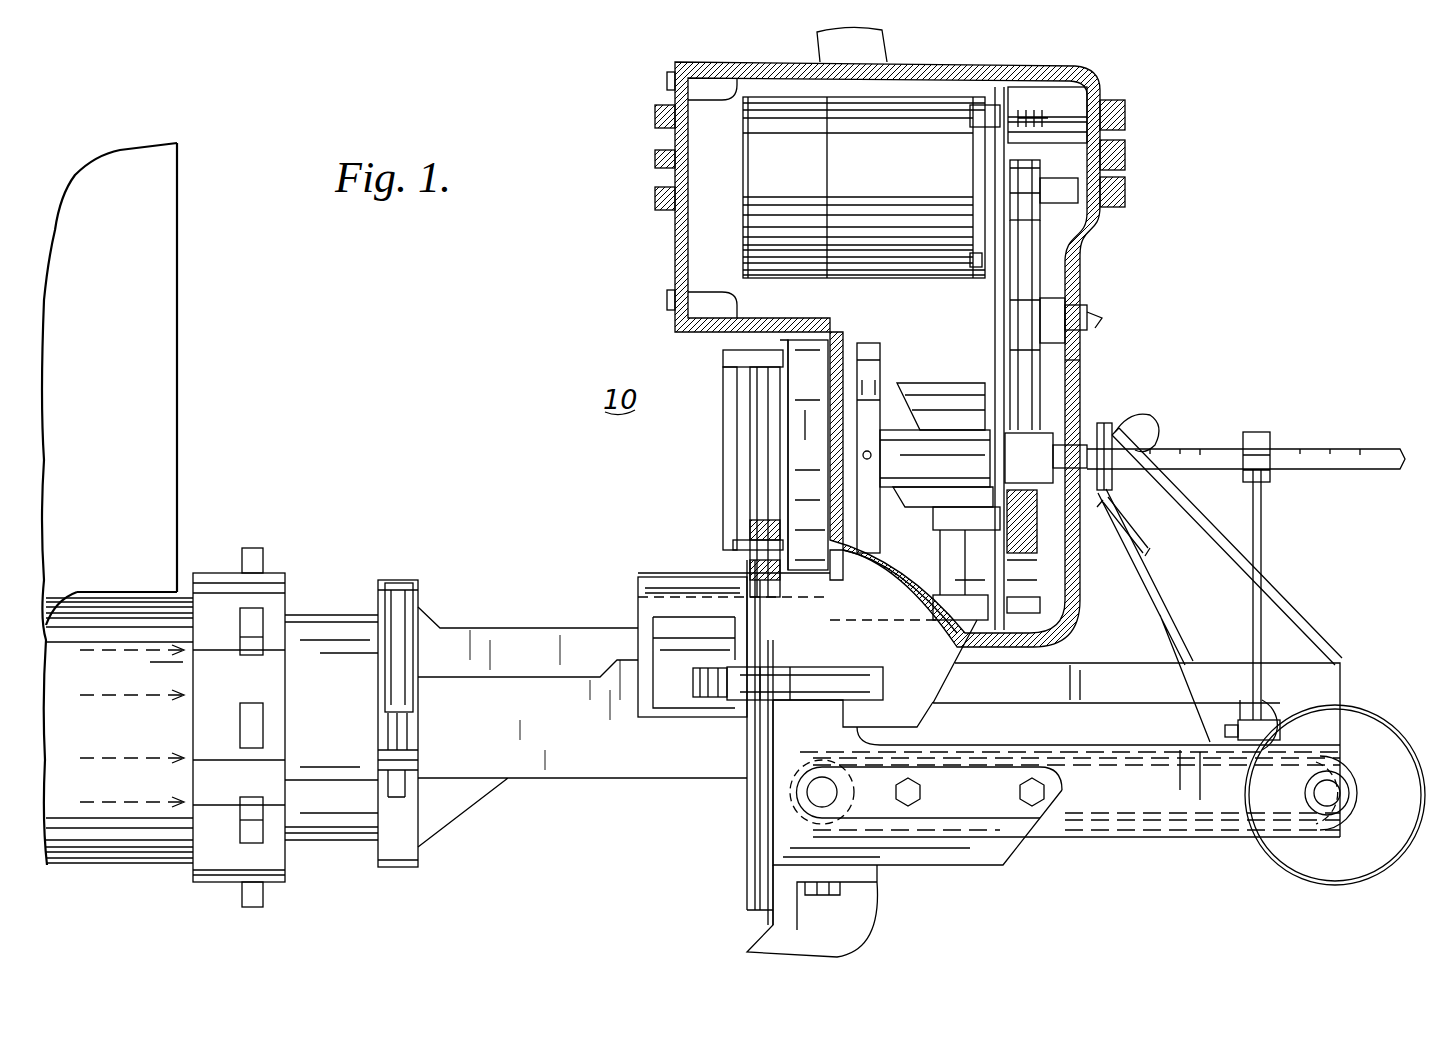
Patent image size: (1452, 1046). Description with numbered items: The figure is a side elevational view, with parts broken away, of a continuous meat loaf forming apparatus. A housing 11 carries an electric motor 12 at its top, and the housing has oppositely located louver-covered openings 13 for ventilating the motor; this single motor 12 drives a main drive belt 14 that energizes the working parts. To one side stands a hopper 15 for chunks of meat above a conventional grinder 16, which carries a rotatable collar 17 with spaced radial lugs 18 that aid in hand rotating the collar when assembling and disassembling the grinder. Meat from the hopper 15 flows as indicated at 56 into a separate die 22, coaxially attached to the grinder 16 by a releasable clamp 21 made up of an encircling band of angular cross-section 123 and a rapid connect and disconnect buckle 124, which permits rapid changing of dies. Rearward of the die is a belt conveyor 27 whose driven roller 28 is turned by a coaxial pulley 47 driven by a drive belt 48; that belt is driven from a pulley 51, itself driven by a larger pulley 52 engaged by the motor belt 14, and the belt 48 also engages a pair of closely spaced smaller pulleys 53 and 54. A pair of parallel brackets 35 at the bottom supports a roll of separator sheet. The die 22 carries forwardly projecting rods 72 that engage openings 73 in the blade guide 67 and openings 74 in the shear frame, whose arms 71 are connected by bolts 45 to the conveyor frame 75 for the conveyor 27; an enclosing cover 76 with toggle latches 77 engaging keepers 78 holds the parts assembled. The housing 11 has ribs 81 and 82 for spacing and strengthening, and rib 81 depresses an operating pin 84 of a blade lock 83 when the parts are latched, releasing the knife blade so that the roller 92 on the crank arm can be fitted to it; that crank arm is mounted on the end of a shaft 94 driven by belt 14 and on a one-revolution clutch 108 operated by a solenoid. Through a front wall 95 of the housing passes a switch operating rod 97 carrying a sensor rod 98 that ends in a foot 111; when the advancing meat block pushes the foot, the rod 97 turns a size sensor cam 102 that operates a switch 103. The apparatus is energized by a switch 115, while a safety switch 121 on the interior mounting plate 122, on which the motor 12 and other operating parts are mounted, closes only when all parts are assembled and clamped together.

The housing 11 is at (675, 265).
The electric motor 12 is at (895, 206).
The louver-covered openings 13 is at (1125, 178).
The main drive belt 14 is at (1035, 285).
The hopper 15 is at (125, 342).
The grinder 16 is at (225, 716).
The rotatable collar 17 is at (222, 618).
The radial lugs 18 is at (262, 548).
The releasable clamp 21 is at (395, 655).
The die 22 is at (555, 725).
The belt conveyor 27 is at (1125, 832).
The driven roller 28 is at (1350, 790).
The brackets 35 is at (865, 922).
The bolts 45 is at (1020, 793).
The coaxial pulley 47 is at (1375, 748).
The drive belt 48 is at (1290, 626).
The pulley 51 is at (1090, 425).
The larger pulley 52 is at (1030, 551).
The smaller pulley 53 is at (1152, 412).
The smaller pulley 54 is at (1120, 560).
The meat flow 56 is at (133, 802).
The blade guide 67 is at (745, 830).
The shear frame arms 71 is at (992, 852).
The forwardly projecting rods 72 is at (980, 650).
The openings 73 is at (742, 592).
The openings 74 is at (757, 571).
The conveyor frame 75 is at (1095, 686).
The enclosing cover 76 is at (882, 616).
The toggle latches 77 is at (855, 672).
The keeper 78 is at (718, 705).
The rib 81 is at (830, 540).
The rib 82 is at (809, 455).
The blade lock 83 is at (735, 478).
The operating pin 84 is at (735, 553).
The roller 92 is at (832, 335).
The shaft 94 is at (1046, 458).
The front wall 95 is at (1082, 372).
The switch operating rod 97 is at (1222, 445).
The sensor rod 98 is at (1262, 522).
The size sensor cam 102 is at (893, 463).
The switch 103 is at (875, 343).
The one-revolution clutch 108 is at (918, 385).
The foot 111 is at (1282, 720).
The switch 115 is at (1090, 320).
The safety switch 121 is at (963, 584).
The mounting plate 122 is at (1000, 315).
The encircling band 123 is at (405, 697).
The buckle 124 is at (415, 777).